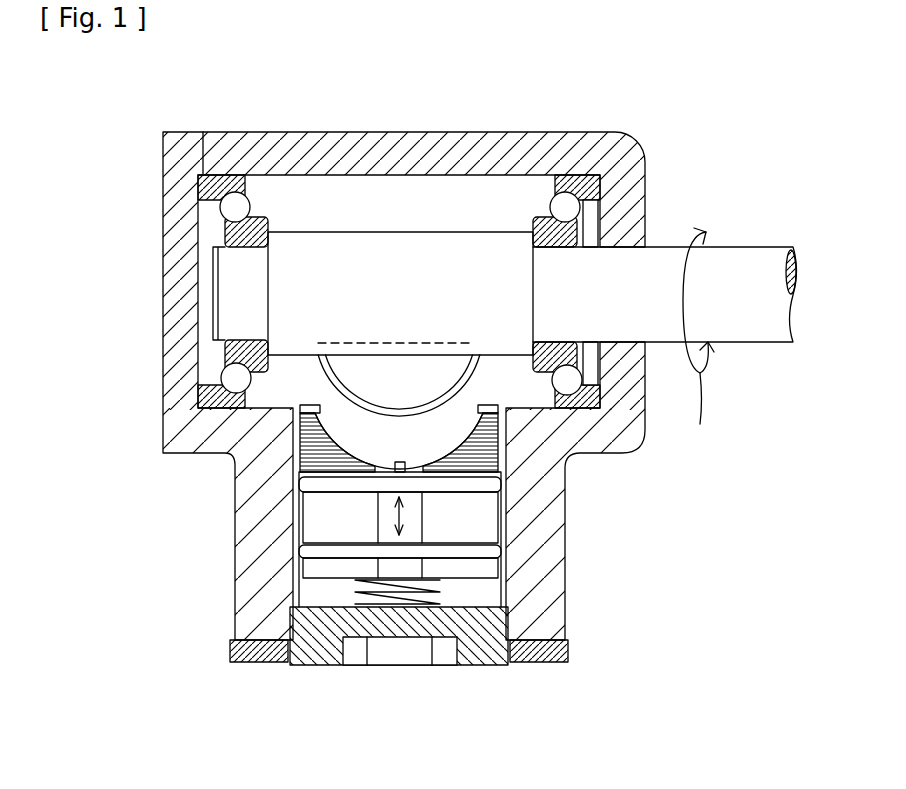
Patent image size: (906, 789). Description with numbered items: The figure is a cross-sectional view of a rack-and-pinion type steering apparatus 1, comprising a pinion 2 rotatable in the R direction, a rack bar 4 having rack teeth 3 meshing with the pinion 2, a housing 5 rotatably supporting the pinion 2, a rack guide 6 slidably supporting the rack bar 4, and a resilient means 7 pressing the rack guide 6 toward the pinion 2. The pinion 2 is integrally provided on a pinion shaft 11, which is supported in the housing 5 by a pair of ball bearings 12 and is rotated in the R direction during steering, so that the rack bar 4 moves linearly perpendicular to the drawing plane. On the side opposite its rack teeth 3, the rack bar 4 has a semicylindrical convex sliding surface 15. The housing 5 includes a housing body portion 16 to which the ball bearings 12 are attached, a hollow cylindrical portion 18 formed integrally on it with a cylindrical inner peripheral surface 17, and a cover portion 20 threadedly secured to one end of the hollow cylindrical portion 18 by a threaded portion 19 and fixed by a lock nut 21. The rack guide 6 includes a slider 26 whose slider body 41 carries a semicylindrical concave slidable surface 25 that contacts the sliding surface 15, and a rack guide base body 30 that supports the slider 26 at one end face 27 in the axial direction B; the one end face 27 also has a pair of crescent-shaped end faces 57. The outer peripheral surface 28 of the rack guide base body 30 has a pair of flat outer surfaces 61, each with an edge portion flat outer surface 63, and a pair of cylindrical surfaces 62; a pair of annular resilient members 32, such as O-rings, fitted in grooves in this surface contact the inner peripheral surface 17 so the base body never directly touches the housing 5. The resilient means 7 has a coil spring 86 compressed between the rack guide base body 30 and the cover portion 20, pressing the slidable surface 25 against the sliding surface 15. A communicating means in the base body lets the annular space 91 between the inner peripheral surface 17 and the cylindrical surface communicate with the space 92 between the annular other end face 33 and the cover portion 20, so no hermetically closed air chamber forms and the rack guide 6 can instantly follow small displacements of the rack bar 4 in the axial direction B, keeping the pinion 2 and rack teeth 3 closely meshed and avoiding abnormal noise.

The rack-and-pinion type steering apparatus 1 is at (655, 135).
The pinion 2 is at (290, 237).
The rack teeth 3 is at (394, 379).
The rack bar 4 is at (437, 380).
The housing 5 is at (443, 128).
The rack guide 6 is at (503, 508).
The resilient means 7 is at (382, 606).
The pinion shaft 11 is at (728, 272).
The ball bearings 12 is at (568, 203).
The sliding surface 15 is at (305, 452).
The housing body portion 16 is at (527, 150).
The cylindrical inner peripheral surface 17 is at (350, 512).
The hollow cylindrical portion 18 is at (545, 556).
The threaded portion 19 is at (294, 663).
The cover portion 20 is at (350, 645).
The lock nut 21 is at (240, 663).
The slidable surface 25 is at (360, 440).
The slider 26 is at (382, 462).
The one end face 27 is at (484, 406).
The outer peripheral surface 28 is at (300, 572).
The rack guide base body 30 is at (517, 475).
The annular resilient members 32 is at (370, 528).
The other end face 33 is at (318, 610).
The slider body 41 is at (405, 430).
The crescent-shaped end faces 57 is at (310, 415).
The flat outer surfaces 61 is at (305, 546).
The cylindrical surfaces 62 is at (318, 470).
The edge portion flat outer surface 63 is at (395, 468).
The coil spring 86 is at (403, 640).
The annular space 91 is at (303, 425).
The space 92 is at (484, 600).
The axial direction B is at (402, 535).
The R direction R is at (698, 340).